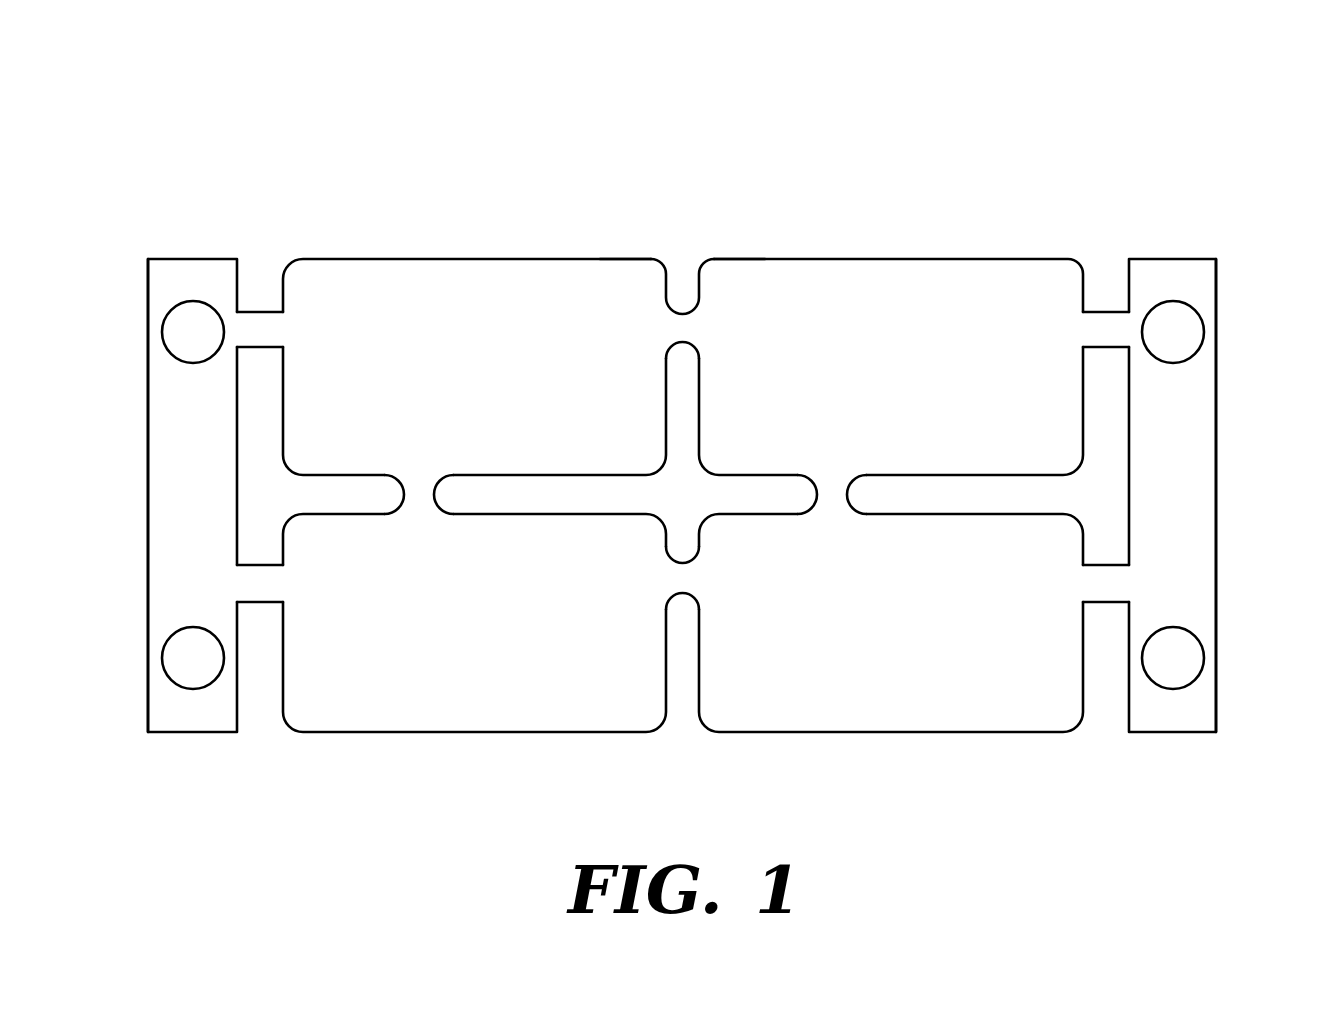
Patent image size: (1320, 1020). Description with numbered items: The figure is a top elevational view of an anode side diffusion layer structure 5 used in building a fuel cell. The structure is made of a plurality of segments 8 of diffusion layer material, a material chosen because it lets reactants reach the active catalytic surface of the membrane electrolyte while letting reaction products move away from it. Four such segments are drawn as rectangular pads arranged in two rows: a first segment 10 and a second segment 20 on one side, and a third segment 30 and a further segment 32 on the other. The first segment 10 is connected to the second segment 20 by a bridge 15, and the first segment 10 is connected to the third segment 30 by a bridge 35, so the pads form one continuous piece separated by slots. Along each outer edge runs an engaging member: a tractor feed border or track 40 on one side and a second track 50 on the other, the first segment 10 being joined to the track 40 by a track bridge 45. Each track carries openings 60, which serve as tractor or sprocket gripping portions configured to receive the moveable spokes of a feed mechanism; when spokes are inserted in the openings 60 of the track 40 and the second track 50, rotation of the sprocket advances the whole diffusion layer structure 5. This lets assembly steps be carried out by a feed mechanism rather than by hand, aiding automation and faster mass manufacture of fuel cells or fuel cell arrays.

The anode side diffusion layer structure 5 is at (363, 128).
The plurality of segments 8 is at (725, 237).
The first segment 10 is at (891, 367).
The bridge 15 is at (832, 500).
The second segment 20 is at (891, 623).
The third segment 30 is at (474, 367).
The segment 32 is at (474, 623).
The bridge 35 is at (680, 331).
The track 40 is at (1192, 482).
The track bridge 45 is at (1110, 323).
The second track 50 is at (187, 462).
The openings 60 is at (1183, 332).